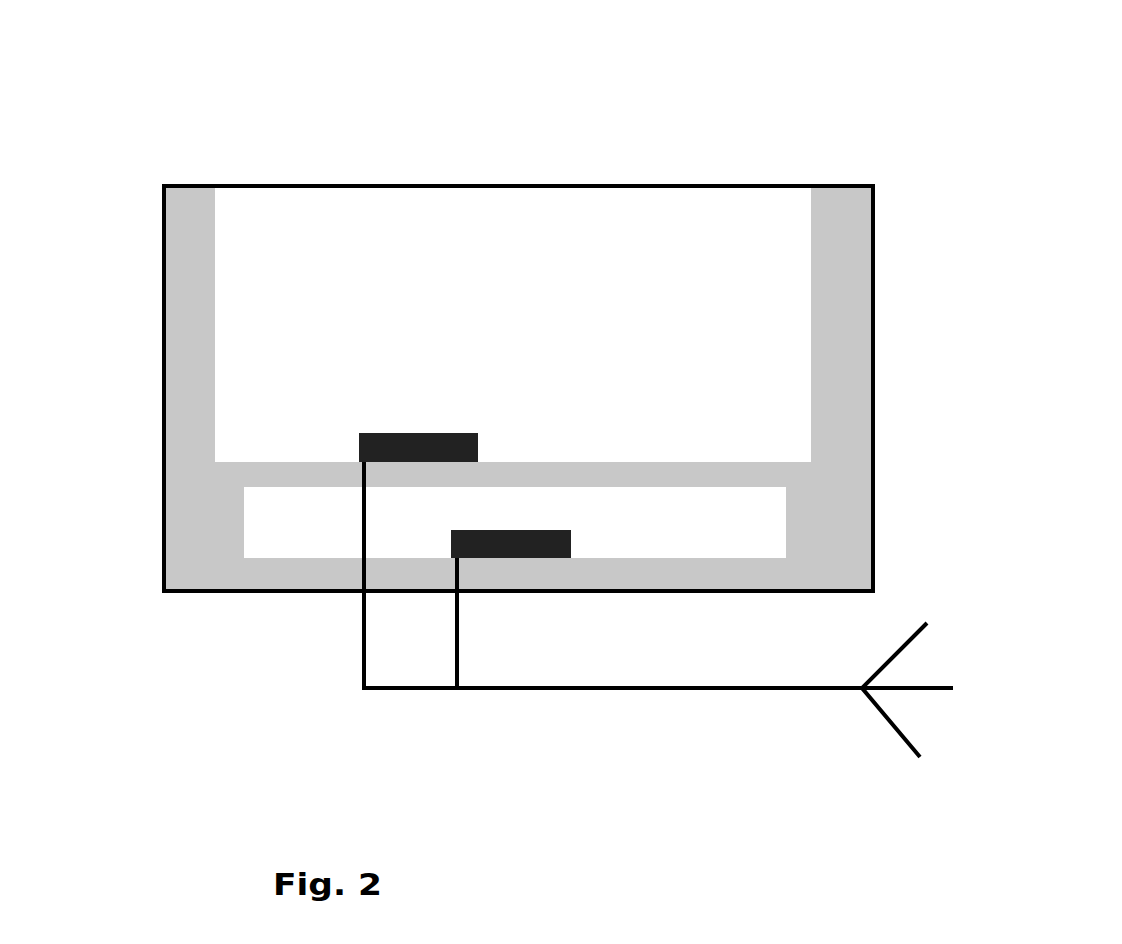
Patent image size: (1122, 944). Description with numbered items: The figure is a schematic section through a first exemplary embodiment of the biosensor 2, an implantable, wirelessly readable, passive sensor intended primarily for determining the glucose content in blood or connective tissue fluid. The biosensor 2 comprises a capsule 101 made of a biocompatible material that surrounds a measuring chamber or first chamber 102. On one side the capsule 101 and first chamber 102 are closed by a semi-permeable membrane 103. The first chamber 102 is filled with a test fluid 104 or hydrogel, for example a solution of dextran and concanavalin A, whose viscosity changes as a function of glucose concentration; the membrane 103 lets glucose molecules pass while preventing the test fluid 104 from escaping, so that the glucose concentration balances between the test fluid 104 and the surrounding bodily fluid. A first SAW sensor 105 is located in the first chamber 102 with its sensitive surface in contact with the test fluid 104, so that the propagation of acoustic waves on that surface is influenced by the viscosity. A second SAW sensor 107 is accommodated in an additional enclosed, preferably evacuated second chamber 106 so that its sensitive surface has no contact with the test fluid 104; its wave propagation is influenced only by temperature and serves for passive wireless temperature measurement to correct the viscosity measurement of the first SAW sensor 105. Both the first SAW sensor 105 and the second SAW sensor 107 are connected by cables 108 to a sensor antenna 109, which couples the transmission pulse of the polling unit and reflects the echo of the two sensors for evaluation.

The biosensor 2 is at (638, 414).
The capsule 101 is at (875, 379).
The first chamber 102 is at (372, 282).
The semi-permeable membrane 103 is at (270, 183).
The test fluid 104 is at (778, 293).
The first SAW sensor 105 is at (413, 433).
The second chamber 106 is at (329, 543).
The second SAW sensor 107 is at (522, 530).
The cables 108 is at (457, 642).
The sensor antenna 109 is at (892, 728).